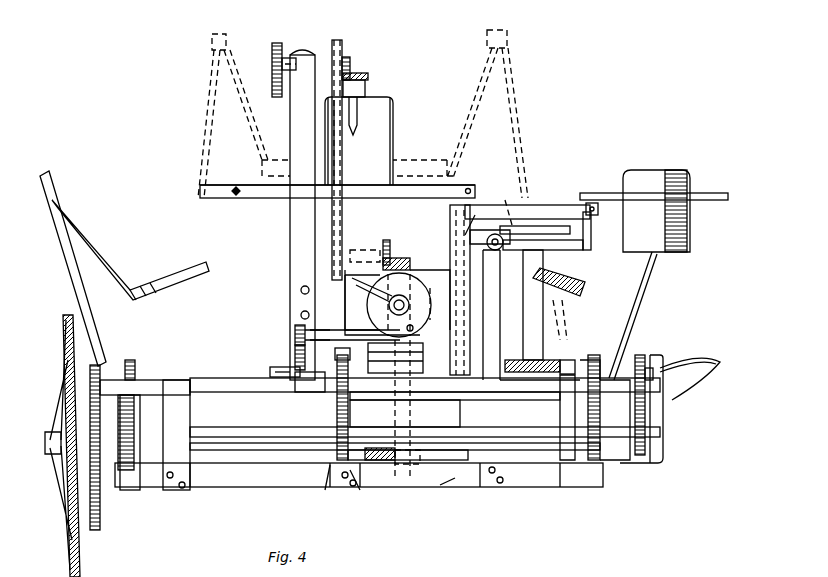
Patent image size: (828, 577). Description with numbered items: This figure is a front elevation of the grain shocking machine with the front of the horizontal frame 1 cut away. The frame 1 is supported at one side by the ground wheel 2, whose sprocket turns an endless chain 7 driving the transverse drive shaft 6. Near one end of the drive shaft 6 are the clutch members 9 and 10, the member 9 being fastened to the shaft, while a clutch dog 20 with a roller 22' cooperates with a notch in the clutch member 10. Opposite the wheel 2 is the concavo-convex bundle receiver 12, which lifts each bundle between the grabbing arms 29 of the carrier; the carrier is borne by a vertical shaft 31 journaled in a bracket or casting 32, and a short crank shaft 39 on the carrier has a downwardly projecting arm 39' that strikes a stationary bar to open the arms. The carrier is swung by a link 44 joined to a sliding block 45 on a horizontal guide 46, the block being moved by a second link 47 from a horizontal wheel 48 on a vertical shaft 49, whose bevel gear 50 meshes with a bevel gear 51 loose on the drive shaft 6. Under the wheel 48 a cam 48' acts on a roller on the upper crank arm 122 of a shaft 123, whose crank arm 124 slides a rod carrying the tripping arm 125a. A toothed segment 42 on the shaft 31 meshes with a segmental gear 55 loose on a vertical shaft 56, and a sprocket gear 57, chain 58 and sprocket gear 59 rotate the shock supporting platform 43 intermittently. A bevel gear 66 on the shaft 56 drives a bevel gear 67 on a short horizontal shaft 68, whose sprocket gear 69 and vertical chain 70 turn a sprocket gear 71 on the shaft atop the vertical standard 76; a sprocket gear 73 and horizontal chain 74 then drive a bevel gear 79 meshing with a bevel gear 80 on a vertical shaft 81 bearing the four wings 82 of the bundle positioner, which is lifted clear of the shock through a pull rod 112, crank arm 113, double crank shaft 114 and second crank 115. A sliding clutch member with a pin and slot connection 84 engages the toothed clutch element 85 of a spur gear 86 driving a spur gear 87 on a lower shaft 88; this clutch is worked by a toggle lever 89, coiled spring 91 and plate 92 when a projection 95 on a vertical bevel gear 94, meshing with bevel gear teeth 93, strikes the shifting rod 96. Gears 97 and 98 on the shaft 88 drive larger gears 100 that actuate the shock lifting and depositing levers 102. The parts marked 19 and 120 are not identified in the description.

The horizontal frame 1 is at (455, 478).
The ground wheel 2 is at (78, 555).
The drive shaft 6 is at (414, 410).
The endless chain 7 is at (102, 512).
The clutch member 9 is at (665, 360).
The clutch member 10 is at (590, 360).
The bundle receiver 12 is at (720, 372).
The bracket plate 19 is at (665, 420).
The clutch dog 20 is at (575, 410).
The roller 22' is at (606, 397).
The grabbing arms 29 is at (728, 200).
The shaft 31 is at (450, 265).
The bracket or casting 32 is at (442, 296).
The crank shaft 39 is at (656, 211).
The crank arm 39' is at (601, 226).
The toothed segment 42 is at (462, 380).
The shock supporting platform 43 is at (470, 440).
The link 44 is at (475, 232).
The sliding block 45 is at (504, 228).
The horizontal guide 46 is at (487, 240).
The second link 47 is at (515, 220).
The horizontal wheel 48 is at (527, 197).
The cam 48' is at (535, 224).
The vertical shaft 49 is at (577, 376).
The bevel gear 50 is at (520, 372).
The bevel gear 51 is at (561, 385).
The segmental gear 55 is at (455, 387).
The vertical shaft 56 is at (400, 408).
The sprocket gear 57 is at (400, 458).
The sprocket chain 58 is at (390, 470).
The sprocket gear 59 is at (350, 490).
The bevel gear 66 is at (405, 258).
The bevel gear 67 is at (389, 240).
The short horizontal shaft 68 is at (372, 250).
The sprocket gear 69 is at (345, 252).
The sprocket chain 70 is at (344, 152).
The second sprocket gear 71 is at (336, 42).
The sprocket gear 73 is at (272, 65).
The horizontal sprocket chain 74 is at (276, 60).
The vertical standard 76 is at (300, 221).
The bevel gear 79 is at (347, 58).
The bevel gear 80 is at (368, 75).
The vertical shaft 81 is at (368, 95).
The wings 82 is at (393, 107).
The pin and slot connection 84 is at (238, 380).
The toothed clutch element 85 is at (300, 392).
The spur gear 86 is at (348, 348).
The spur gear 87 is at (342, 460).
The shaft 88 is at (200, 437).
The toggle lever 89 is at (295, 325).
The coiled spring 91 is at (295, 347).
The plate 92 is at (300, 355).
The bevel gear teeth 93 is at (418, 345).
The vertical bevel gear 94 is at (391, 305).
The projection 95 is at (416, 326).
The shifting rod 96 is at (333, 330).
The gear 97 is at (605, 460).
The gear 98 is at (122, 470).
The gears 100 is at (130, 360).
The shock lifting and depositing levers 102 is at (60, 245).
The pull rod 112 is at (325, 203).
The crank arm 113 is at (335, 470).
The double crank shaft 114 is at (228, 452).
The second crank 115 is at (150, 420).
The rail 120 is at (275, 395).
The upper horizontal crank arm 122 is at (545, 255).
The shaft 123 is at (495, 320).
The crank arm 124 is at (530, 470).
The guiding and tripping arm 125a is at (490, 5).